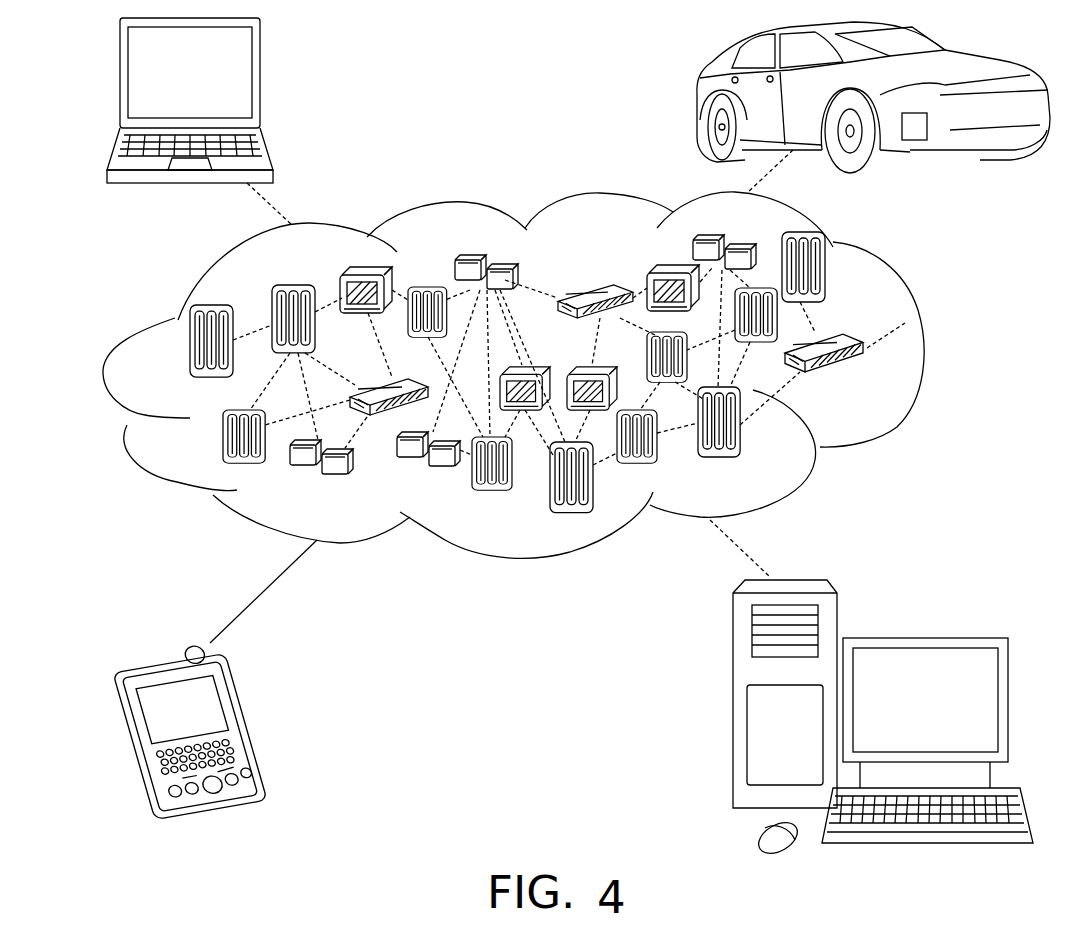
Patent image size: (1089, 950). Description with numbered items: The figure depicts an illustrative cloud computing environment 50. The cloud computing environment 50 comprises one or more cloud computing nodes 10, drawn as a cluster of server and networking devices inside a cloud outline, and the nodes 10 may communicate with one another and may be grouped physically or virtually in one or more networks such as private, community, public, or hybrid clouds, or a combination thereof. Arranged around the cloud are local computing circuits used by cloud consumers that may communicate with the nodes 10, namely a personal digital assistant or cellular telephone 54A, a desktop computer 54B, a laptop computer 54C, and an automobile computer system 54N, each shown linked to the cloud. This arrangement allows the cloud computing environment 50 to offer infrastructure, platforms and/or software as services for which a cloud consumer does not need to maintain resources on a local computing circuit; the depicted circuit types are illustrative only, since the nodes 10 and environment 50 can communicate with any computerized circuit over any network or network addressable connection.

The cloud computing environment 50 is at (923, 352).
The cloud computing nodes 10 is at (870, 385).
The personal digital assistant (PDA) or cellular telephone 54A is at (250, 732).
The desktop computer 54B is at (922, 632).
The laptop computer 54C is at (260, 80).
The automobile computer system 54N is at (700, 97).